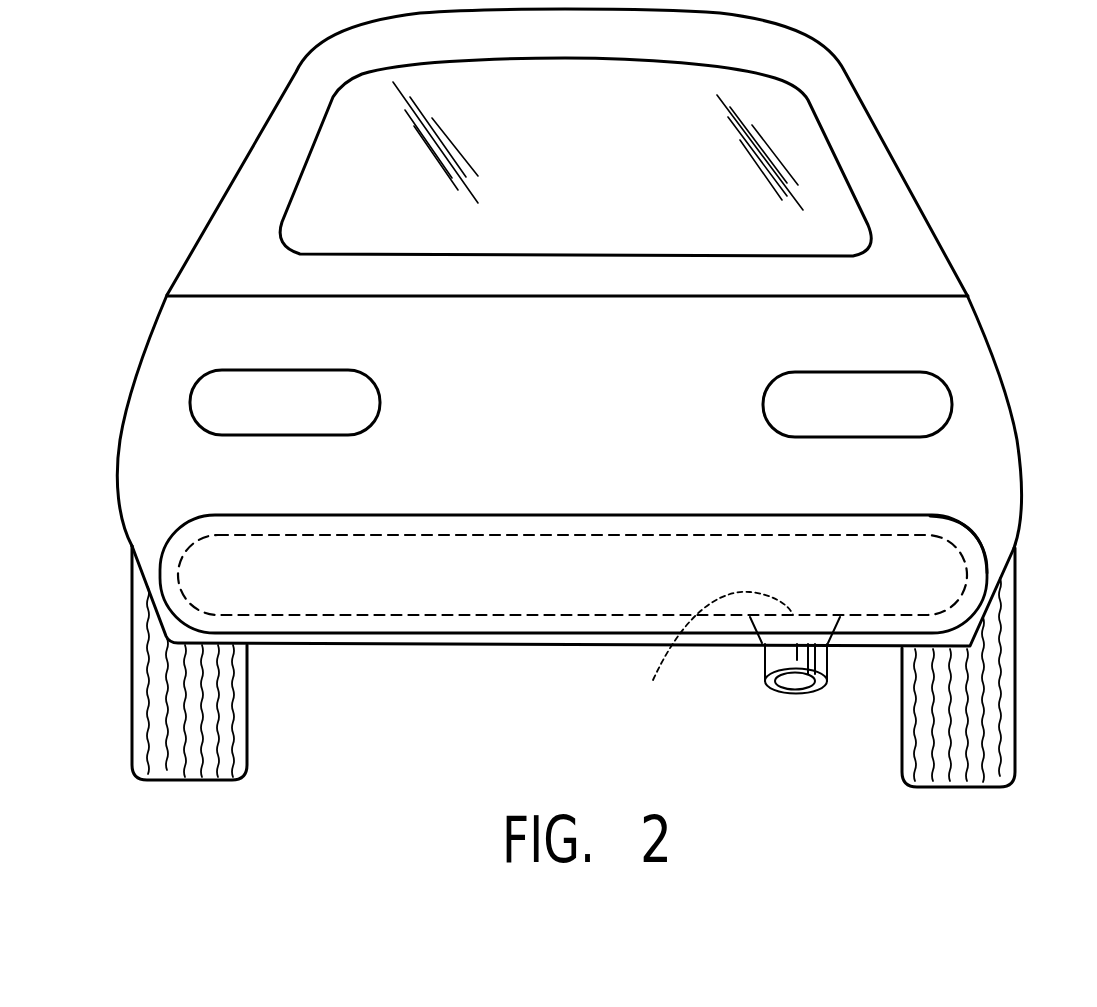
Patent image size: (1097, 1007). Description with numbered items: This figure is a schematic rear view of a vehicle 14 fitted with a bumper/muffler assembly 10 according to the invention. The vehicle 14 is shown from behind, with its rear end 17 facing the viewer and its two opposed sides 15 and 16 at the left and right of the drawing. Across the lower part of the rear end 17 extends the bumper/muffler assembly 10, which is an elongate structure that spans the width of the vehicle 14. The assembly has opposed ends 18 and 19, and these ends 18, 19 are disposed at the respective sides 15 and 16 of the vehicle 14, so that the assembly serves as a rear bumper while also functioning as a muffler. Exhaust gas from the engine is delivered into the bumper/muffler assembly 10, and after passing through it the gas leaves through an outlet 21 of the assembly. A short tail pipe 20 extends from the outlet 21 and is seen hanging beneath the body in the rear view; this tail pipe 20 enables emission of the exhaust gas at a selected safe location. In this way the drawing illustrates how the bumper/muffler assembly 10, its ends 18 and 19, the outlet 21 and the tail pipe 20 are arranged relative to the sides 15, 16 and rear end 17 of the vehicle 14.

The bumper/muffler assembly 10 is at (410, 639).
The vehicle 14 is at (143, 332).
The side 15 is at (120, 438).
The side 16 is at (1020, 431).
The rear end 17 is at (955, 325).
The end 18 is at (153, 563).
The end 19 is at (986, 572).
The tail pipe 20 is at (775, 690).
The outlet 21 is at (712, 654).